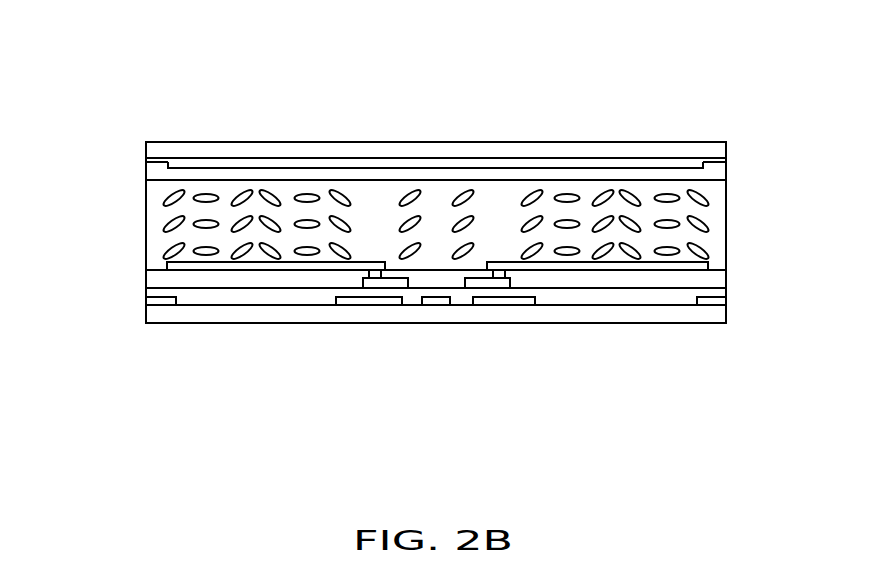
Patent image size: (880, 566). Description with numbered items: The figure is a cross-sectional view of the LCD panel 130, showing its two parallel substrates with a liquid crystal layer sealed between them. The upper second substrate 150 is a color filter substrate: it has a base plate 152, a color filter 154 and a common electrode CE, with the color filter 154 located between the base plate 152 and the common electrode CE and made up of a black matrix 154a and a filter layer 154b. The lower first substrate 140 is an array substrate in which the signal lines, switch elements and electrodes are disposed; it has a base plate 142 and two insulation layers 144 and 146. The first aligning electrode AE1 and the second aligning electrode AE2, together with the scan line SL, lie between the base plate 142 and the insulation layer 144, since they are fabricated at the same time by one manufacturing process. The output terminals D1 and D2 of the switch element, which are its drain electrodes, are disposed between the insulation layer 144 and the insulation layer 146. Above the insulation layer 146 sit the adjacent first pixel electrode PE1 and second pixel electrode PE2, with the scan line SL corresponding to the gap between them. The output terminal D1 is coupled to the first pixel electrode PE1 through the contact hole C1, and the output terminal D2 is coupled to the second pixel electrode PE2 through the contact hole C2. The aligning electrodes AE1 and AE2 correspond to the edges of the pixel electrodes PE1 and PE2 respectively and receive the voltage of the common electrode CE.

The LCD panel 130 is at (220, 72).
The second substrate 150 is at (735, 173).
The base plate 152 is at (495, 145).
The color filter 154 is at (568, 70).
The black matrix 154a is at (710, 160).
The filter layer 154b is at (600, 160).
The common electrode CE is at (387, 177).
The first substrate 140 is at (760, 323).
The base plate 142 is at (597, 315).
The insulation layer 144 is at (727, 293).
The insulation layer 146 is at (723, 277).
The second aligning electrode AE2 is at (153, 305).
The first aligning electrode AE1 is at (532, 307).
The scan line SL is at (436, 305).
The output terminal D2 is at (393, 288).
The output terminal D1 is at (480, 288).
The contact hole C2 is at (375, 288).
The contact hole C1 is at (499, 288).
The second pixel electrode PE2 is at (168, 265).
The first pixel electrode PE1 is at (652, 265).